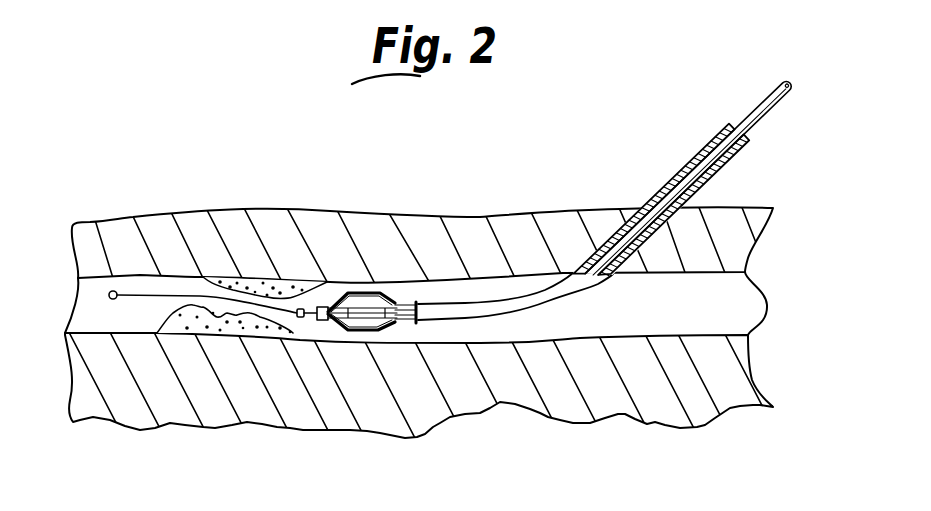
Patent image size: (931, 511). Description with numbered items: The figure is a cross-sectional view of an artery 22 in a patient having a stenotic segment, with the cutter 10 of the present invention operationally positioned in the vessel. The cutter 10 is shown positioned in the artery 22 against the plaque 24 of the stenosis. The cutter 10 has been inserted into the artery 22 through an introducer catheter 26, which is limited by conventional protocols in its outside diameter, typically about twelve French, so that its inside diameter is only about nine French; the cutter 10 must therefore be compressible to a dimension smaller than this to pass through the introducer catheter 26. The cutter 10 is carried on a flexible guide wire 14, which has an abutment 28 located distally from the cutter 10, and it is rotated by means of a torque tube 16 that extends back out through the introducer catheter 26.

The cutter 10 is at (367, 292).
The flexible guide wire 14 is at (133, 296).
The torque tube 16 is at (760, 98).
The artery 22 is at (518, 295).
The plaque 24 is at (260, 283).
The introducer catheter 26 is at (738, 160).
The abutment 28 is at (300, 318).